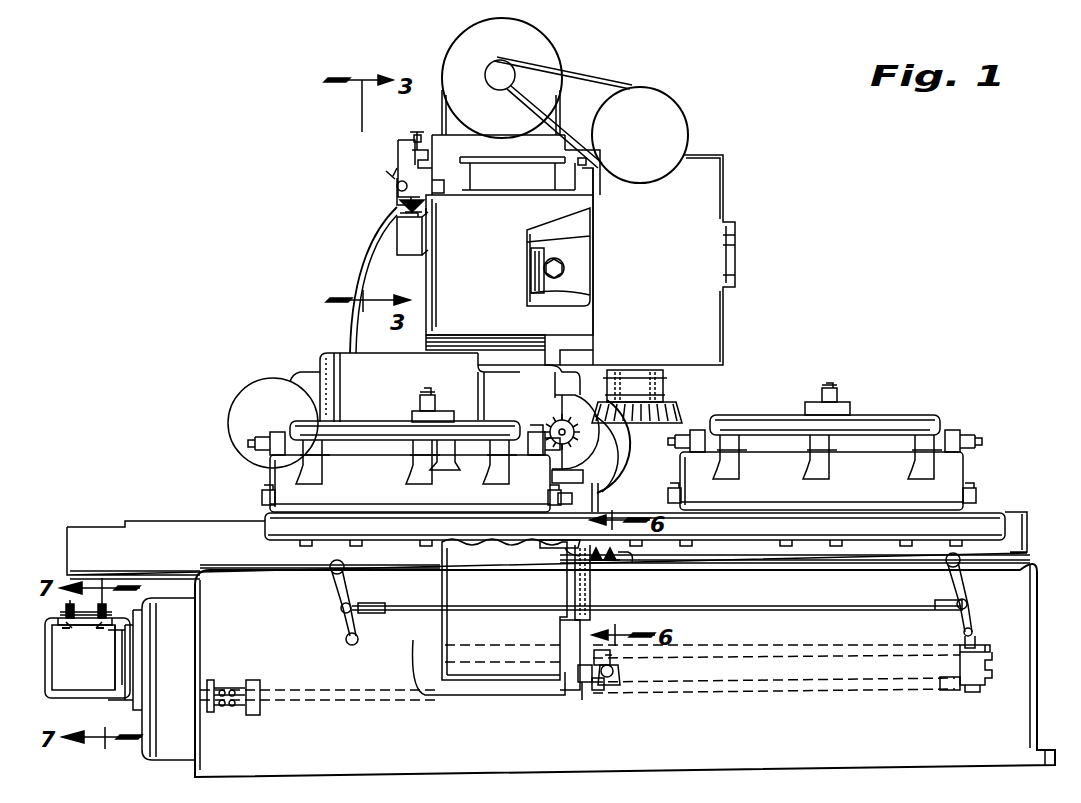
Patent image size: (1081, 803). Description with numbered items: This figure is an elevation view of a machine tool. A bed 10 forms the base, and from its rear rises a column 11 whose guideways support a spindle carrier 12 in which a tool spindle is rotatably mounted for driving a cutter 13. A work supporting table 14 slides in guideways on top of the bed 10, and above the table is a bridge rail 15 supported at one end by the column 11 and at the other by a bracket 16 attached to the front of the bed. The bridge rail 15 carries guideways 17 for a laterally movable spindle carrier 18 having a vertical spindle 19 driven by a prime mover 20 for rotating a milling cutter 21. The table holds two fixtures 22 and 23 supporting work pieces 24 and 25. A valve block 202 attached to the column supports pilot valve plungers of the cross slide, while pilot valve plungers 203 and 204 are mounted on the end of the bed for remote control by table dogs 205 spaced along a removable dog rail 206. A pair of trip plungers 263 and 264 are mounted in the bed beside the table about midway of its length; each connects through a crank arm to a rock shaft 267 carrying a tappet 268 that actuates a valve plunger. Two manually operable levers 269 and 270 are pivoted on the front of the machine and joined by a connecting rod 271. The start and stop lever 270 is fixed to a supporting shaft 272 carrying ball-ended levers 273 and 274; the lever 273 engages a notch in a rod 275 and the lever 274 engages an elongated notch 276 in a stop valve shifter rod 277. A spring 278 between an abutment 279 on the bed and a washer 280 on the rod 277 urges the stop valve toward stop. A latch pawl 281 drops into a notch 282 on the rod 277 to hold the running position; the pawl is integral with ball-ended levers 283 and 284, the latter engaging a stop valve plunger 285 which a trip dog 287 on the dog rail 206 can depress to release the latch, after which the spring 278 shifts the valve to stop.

The bed 10 is at (1032, 591).
The column 11 is at (366, 276).
The spindle carrier 12 is at (598, 452).
The cutter 13 is at (606, 482).
The work supporting table 14 is at (1010, 512).
The bridge rail 15 is at (430, 336).
The bracket 16 is at (445, 660).
The guideways 17 is at (460, 172).
The spindle carrier 18 is at (708, 191).
The vertical spindle 19 is at (640, 378).
The prime mover 20 is at (540, 46).
The milling cutter 21 is at (662, 406).
The fixture 22 is at (280, 479).
The fixture 23 is at (962, 466).
The work piece 24 is at (292, 420).
The work piece 25 is at (940, 406).
The valve block 202 is at (405, 232).
The pilot valve plunger 203 is at (70, 628).
The pilot valve plunger 204 is at (104, 628).
The table dogs 205 is at (692, 554).
The dog rail 206 is at (990, 526).
The trip plunger 263 is at (628, 560).
The trip plunger 264 is at (580, 580).
The rock shaft 267 is at (100, 628).
The tappet 268 is at (82, 612).
The manually operable lever 269 is at (338, 593).
The manually operable lever 270 is at (962, 588).
The connecting rod 271 is at (842, 602).
The supporting shaft 272 is at (966, 624).
The ball-ended lever 273 is at (972, 645).
The ball-ended lever 274 is at (978, 660).
The rod 275 is at (880, 636).
The elongated notch 276 is at (960, 690).
The stop valve shifter rod 277 is at (850, 692).
The spring 278 is at (218, 704).
The abutment 279 is at (255, 680).
The washer 280 is at (225, 670).
The latch pawl 281 is at (620, 690).
The notch 282 is at (600, 692).
The ball-ended lever 283 is at (616, 670).
The ball-ended lever 284 is at (582, 692).
The stop valve plunger 285 is at (576, 640).
The trip dog 287 is at (580, 540).